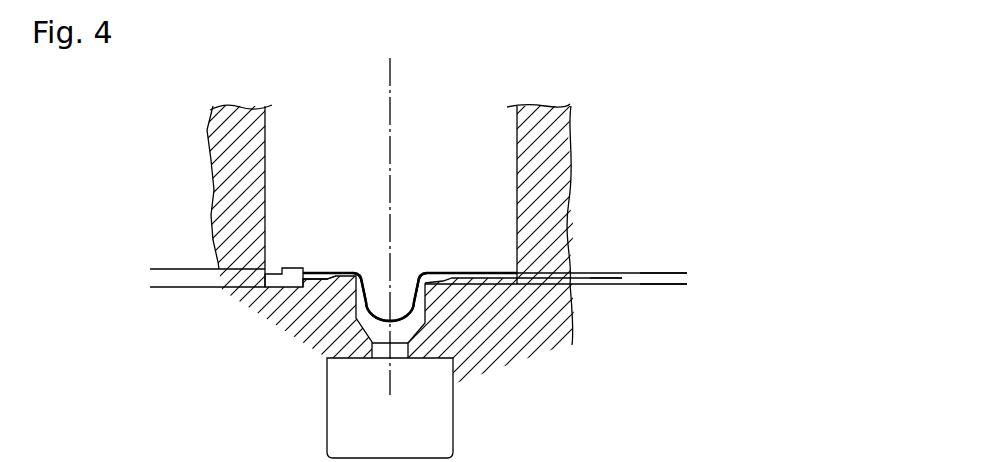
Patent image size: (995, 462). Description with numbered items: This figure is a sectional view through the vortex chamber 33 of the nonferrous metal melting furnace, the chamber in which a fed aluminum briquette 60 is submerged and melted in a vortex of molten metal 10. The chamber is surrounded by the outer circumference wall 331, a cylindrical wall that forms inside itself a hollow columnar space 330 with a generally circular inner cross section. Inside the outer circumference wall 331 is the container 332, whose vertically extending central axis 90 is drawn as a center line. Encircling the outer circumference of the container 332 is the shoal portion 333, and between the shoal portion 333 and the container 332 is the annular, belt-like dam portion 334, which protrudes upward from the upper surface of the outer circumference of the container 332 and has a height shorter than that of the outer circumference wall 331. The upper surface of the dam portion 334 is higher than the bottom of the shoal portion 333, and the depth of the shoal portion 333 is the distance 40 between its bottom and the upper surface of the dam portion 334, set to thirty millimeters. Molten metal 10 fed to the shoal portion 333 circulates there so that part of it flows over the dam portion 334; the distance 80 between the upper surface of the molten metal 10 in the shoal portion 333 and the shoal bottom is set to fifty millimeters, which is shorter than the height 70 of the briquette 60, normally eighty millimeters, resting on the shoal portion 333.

The molten metal 10 is at (320, 270).
The vortex chamber 33 is at (603, 92).
The distance 40 is at (603, 284).
The aluminum briquette 60 is at (294, 267).
The height 70 is at (167, 287).
The distance 80 is at (670, 284).
The central axis 90 is at (390, 83).
The space 330 is at (484, 158).
The outer circumference wall 331 is at (553, 133).
The container 332 is at (369, 326).
The shoal portion 333 is at (313, 288).
The dam portion 334 is at (345, 268).